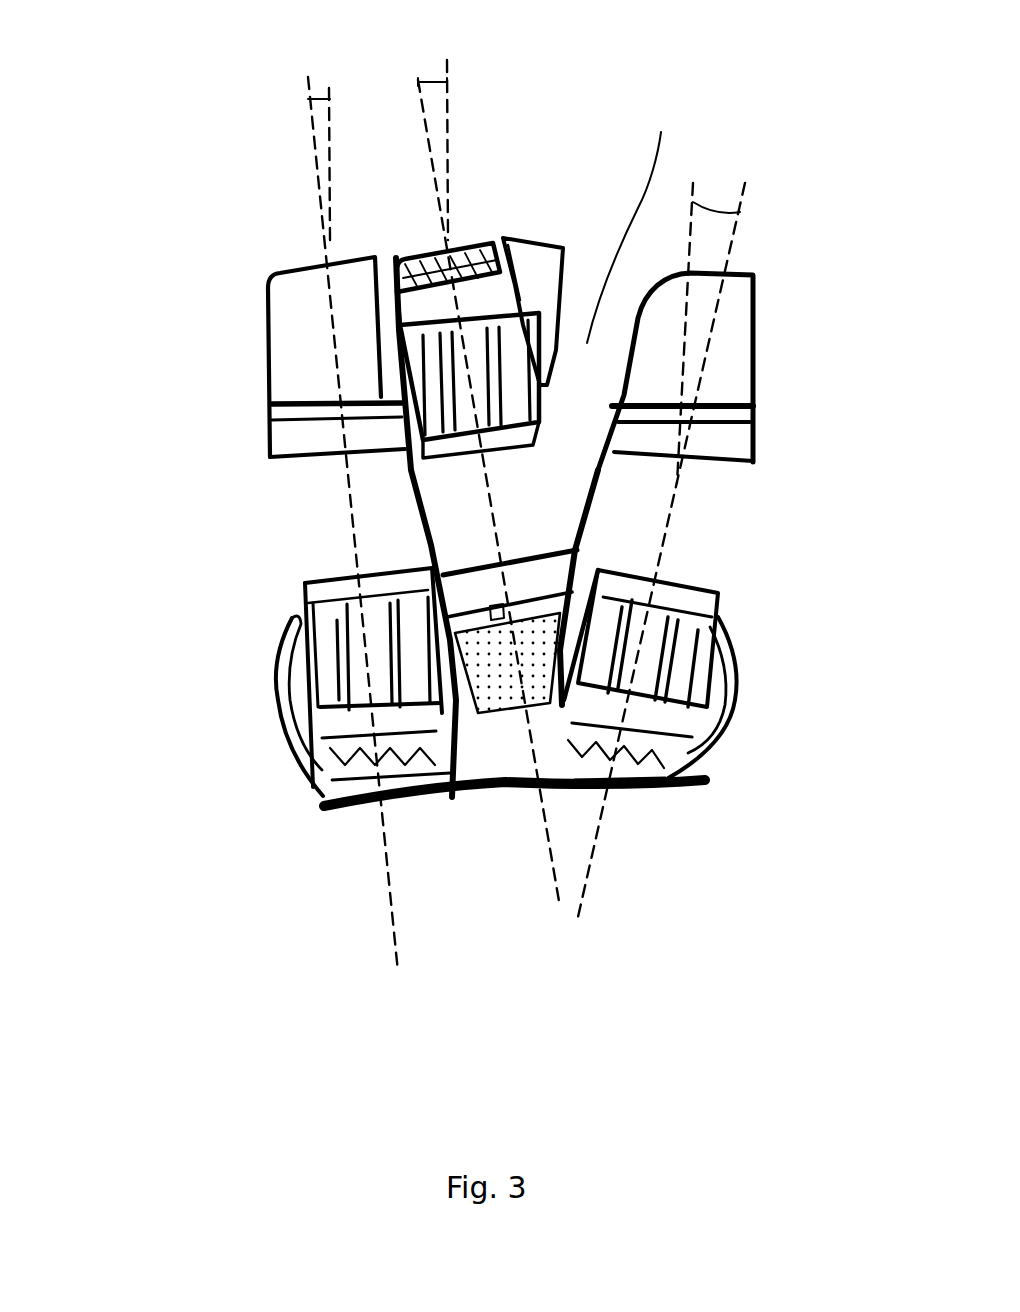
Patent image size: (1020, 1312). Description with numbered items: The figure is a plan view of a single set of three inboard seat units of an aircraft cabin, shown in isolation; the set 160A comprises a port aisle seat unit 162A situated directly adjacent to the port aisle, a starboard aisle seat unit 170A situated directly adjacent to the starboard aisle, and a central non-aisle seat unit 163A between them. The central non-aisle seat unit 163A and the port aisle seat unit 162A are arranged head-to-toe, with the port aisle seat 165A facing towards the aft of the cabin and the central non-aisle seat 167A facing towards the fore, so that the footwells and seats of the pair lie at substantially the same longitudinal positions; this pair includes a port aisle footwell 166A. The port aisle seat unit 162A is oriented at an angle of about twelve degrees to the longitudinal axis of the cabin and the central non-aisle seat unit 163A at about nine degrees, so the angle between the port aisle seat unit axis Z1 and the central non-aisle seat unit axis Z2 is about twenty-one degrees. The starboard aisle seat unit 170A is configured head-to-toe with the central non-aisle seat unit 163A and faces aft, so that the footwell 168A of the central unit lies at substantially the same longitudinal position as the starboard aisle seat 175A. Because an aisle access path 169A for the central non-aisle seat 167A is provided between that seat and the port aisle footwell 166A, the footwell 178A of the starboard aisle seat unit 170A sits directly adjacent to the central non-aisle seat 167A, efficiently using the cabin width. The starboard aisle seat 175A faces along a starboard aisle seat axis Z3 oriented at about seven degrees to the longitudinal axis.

The tooth positioning assembly 160A is at (184, 203).
The starboard aisle seat unit 170A is at (197, 540).
The port aisle seat unit 162A is at (776, 704).
The central non-aisle seat unit 163A is at (515, 906).
The central non-aisle seat 167A is at (468, 302).
The footwell of the starboard aisle seat unit 178A is at (295, 360).
The starboard aisle seat 175A is at (341, 741).
The port aisle footwell 166A is at (737, 380).
The port aisle seat 165A is at (677, 683).
The footwell of the central non-aisle seat unit 168A is at (495, 700).
The aisle access path 169A is at (646, 218).
The port aisle seat unit axis Z1 is at (678, 500).
The central non-aisle seat unit axis Z2 is at (427, 150).
The starboard aisle seat axis Z3 is at (350, 525).